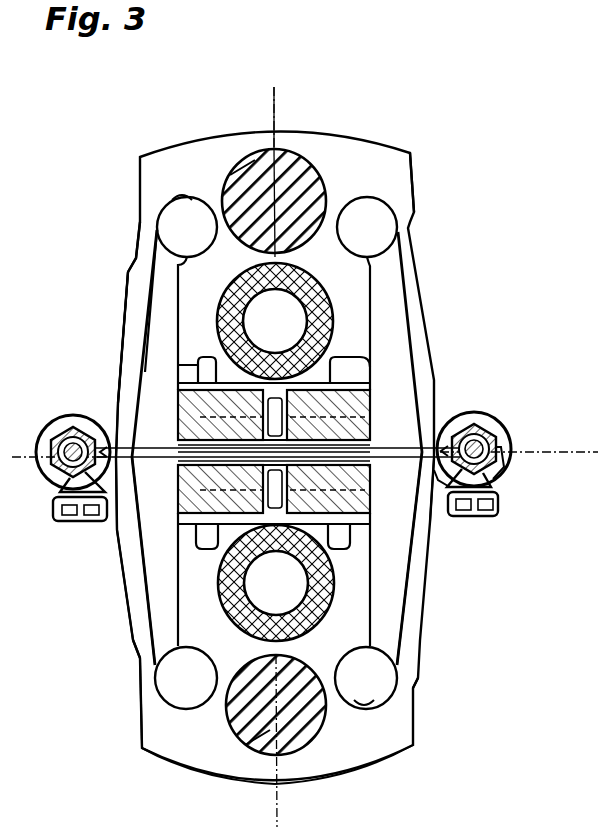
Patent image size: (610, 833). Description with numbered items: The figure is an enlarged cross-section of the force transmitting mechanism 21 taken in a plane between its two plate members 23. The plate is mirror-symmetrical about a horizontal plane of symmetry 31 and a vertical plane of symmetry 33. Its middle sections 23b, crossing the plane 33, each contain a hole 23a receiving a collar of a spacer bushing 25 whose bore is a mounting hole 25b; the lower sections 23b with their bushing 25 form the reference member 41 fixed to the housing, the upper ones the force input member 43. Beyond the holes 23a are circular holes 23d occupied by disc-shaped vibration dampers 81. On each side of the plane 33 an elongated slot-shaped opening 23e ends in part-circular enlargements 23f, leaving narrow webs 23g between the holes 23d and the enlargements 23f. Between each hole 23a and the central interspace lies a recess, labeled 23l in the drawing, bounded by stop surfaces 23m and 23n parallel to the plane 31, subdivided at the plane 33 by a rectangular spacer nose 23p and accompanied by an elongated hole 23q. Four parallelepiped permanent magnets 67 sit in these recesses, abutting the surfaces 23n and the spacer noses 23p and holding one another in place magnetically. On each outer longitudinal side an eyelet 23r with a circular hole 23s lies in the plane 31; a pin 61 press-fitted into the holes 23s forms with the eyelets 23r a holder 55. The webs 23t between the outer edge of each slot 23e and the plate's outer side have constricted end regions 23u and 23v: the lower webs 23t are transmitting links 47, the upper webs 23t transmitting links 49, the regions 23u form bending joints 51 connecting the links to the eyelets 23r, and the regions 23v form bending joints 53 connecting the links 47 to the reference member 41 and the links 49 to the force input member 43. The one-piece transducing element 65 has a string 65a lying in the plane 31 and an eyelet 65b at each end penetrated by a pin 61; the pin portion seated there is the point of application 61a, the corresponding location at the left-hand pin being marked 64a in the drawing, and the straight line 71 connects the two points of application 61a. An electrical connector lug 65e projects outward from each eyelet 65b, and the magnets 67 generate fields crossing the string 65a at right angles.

The force transmitting mechanism 21 is at (421, 196).
The plate member 23 is at (423, 652).
The hole 23a is at (335, 303).
The middle section 23b is at (355, 270).
The circular hole 23d is at (248, 172).
The elongated slot-shaped opening 23e is at (402, 315).
The enlargement 23f is at (167, 200).
The web 23g is at (336, 690).
The partition wall 23l is at (342, 372).
The boundary surface 23m is at (373, 350).
The boundary surface 23n is at (380, 402).
The spacer nose 23p is at (178, 325).
The elongated hole 23q is at (178, 363).
The eyelet 23r is at (497, 485).
The circular hole 23s is at (66, 429).
The web 23t is at (135, 260).
The constricted end region 23u is at (112, 512).
The constricted end region 23v is at (138, 703).
The spacer bushing 25 is at (232, 614).
The mounting hole 25b is at (372, 610).
The horizontal plane of symmetry 31 is at (535, 447).
The vertical plane of symmetry 33 is at (281, 112).
The reference member 41 is at (176, 624).
The force input member 43 is at (150, 272).
The transmitting link 47 is at (128, 616).
The transmitting link 49 is at (176, 291).
The bending joint 51 is at (112, 409).
The bending joint 53 is at (137, 222).
The holder 55 is at (68, 412).
The pin 61 is at (497, 431).
The point of application 61a is at (497, 419).
The rod end 64a is at (138, 437).
The transducing element 65 is at (493, 477).
The string 65a is at (482, 521).
The eyelet 65b is at (80, 410).
The electrical connector lug 65e is at (60, 519).
The permanent magnet 67 is at (183, 548).
The points-of-application-connecting line 71 is at (20, 462).
The vibration damper 81 is at (226, 183).